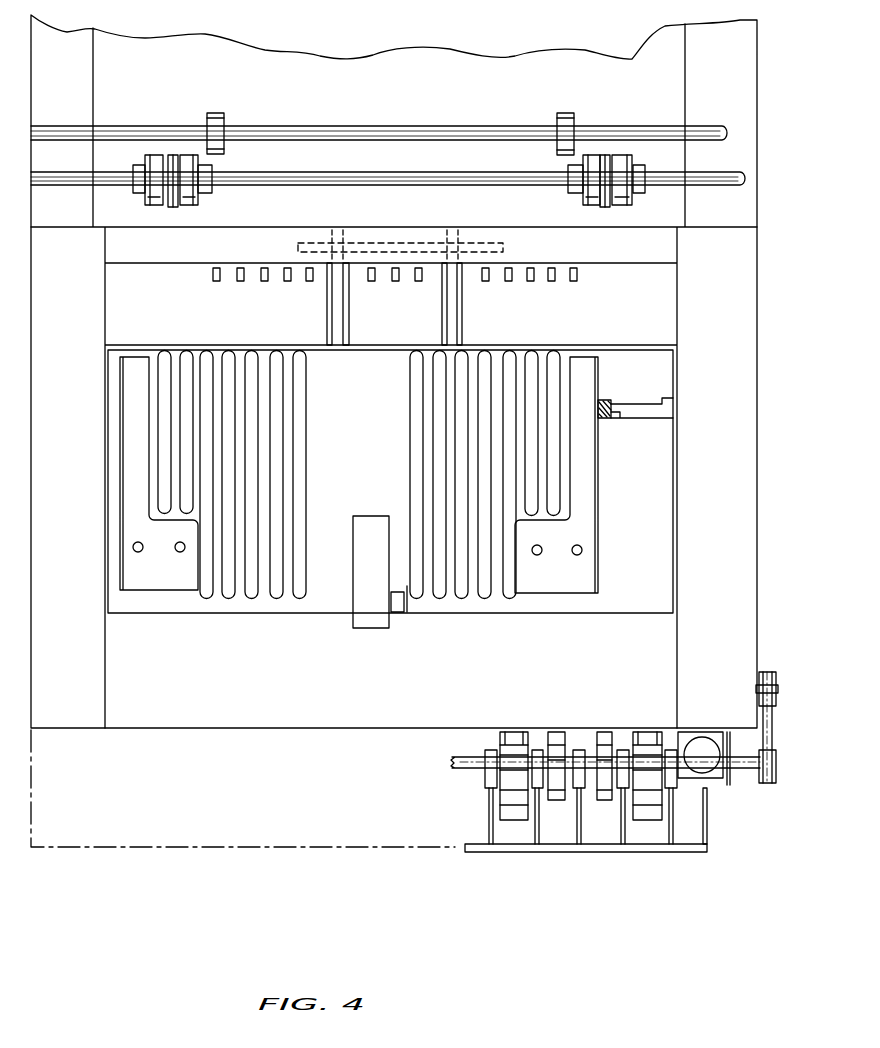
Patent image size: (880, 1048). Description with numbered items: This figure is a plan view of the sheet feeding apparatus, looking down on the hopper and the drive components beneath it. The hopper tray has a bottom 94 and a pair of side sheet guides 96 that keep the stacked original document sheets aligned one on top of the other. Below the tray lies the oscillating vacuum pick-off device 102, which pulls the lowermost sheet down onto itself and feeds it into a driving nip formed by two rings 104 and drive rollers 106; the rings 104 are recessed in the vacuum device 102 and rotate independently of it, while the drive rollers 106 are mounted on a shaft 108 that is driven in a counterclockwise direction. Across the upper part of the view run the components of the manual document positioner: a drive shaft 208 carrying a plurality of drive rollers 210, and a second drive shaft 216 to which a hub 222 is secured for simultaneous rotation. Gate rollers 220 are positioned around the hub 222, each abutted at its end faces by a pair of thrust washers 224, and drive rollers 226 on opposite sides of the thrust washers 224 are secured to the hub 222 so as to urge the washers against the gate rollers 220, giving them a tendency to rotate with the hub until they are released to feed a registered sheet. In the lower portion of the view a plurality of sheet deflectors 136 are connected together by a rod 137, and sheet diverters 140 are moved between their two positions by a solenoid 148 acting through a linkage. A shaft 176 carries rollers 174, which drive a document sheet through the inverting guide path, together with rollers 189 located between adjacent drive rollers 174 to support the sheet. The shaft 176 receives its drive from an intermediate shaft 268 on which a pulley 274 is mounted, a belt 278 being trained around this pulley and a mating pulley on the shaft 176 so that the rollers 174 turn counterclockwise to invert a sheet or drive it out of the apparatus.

The bottom 94 is at (364, 465).
The side sheet guides 96 is at (127, 478).
The oscillating vacuum pick-off device 102 is at (627, 315).
The rings 104 is at (455, 330).
The drive rollers 106 is at (445, 228).
The shaft 108 is at (497, 243).
The sheet deflectors 136 is at (622, 825).
The rod 137 is at (470, 853).
The sheet diverters 140 is at (572, 793).
The solenoid 148 is at (702, 745).
The rollers 174 is at (645, 822).
The shaft 176 is at (745, 775).
The rollers 189 is at (605, 731).
The drive shaft 208 is at (370, 127).
The drive rollers 210 is at (222, 128).
The drive shaft 216 is at (380, 174).
The gate rollers 220 is at (173, 154).
The hub 222 is at (138, 165).
The thrust washers 224 is at (170, 210).
The drive rollers 226 is at (150, 197).
The intermediate shaft 268 is at (778, 691).
The pulley 274 is at (776, 682).
The belt 278 is at (776, 744).